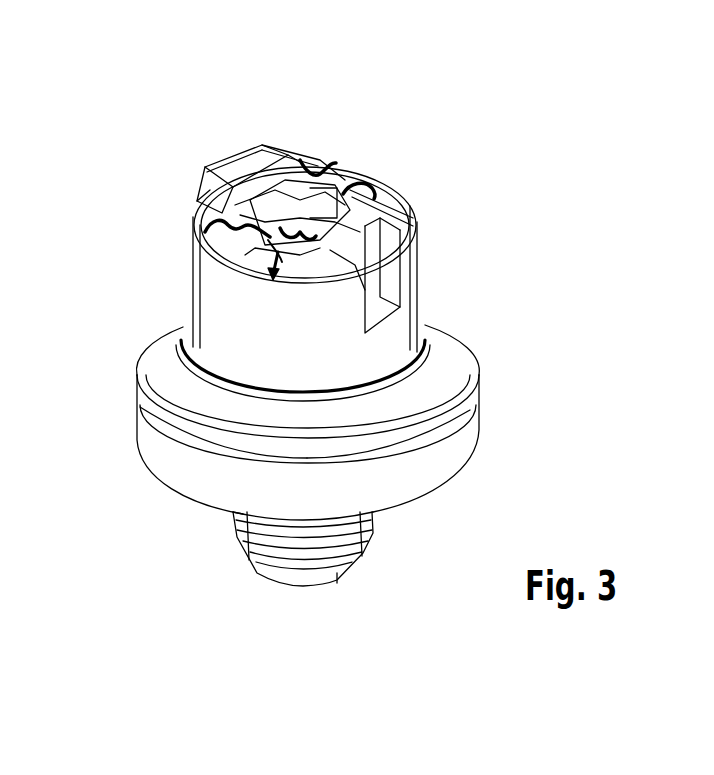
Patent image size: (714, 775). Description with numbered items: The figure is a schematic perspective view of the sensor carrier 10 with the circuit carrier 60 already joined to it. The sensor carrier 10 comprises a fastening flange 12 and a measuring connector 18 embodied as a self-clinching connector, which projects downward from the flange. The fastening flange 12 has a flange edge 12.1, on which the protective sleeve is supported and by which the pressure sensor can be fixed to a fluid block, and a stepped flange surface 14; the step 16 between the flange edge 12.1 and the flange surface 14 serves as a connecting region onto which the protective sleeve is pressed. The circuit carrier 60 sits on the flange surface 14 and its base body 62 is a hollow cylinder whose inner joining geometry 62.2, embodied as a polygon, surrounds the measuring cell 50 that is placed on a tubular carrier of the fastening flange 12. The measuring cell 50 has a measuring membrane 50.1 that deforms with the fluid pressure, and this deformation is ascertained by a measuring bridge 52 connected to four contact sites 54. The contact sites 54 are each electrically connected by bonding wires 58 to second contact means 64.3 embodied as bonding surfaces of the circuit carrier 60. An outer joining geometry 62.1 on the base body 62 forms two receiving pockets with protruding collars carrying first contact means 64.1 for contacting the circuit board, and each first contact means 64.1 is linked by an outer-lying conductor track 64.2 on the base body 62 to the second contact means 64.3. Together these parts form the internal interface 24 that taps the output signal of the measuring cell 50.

The sensor carrier 10 is at (166, 503).
The fastening flange 12 is at (215, 470).
The flange edge 12.1 is at (184, 403).
The flange surface 14 is at (421, 327).
The step 16 is at (378, 402).
The measuring connector 18 is at (370, 540).
The internal interface 24 is at (510, 214).
The measuring cell 50 is at (355, 149).
The measuring membrane 50.1 is at (300, 205).
The measuring bridge 52 is at (233, 233).
The contact sites 54 is at (262, 185).
The bonding wires 58 is at (308, 198).
The circuit carrier 60 is at (442, 189).
The base body 62 is at (208, 328).
The outer joining geometry 62.1 is at (233, 154).
The inner joining geometry 62.2 is at (234, 152).
The first contact means 64.1 is at (262, 183).
The outer-lying conductor track 64.2 is at (277, 185).
The second contact means 64.3 is at (394, 218).